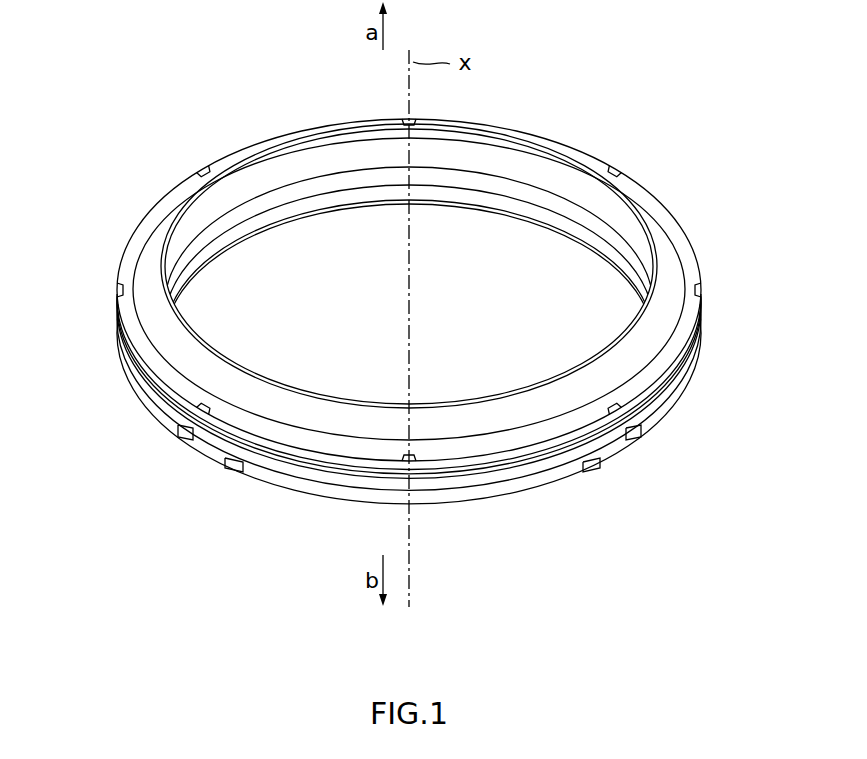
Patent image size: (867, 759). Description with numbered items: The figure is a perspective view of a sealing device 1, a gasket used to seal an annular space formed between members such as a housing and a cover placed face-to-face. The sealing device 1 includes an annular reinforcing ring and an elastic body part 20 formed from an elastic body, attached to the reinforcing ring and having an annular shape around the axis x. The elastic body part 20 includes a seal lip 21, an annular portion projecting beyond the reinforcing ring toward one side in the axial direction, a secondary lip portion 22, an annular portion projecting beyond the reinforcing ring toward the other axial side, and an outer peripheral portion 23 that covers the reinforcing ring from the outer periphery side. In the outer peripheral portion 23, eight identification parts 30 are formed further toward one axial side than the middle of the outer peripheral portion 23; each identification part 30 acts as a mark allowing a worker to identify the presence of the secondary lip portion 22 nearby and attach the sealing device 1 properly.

The sealing device 1 is at (713, 148).
The elastic body part 20 is at (119, 476).
The seal lip 21 is at (248, 364).
The secondary lip portion 22 is at (560, 240).
The outer peripheral portion 23 is at (703, 372).
The identification part 30 is at (210, 164).